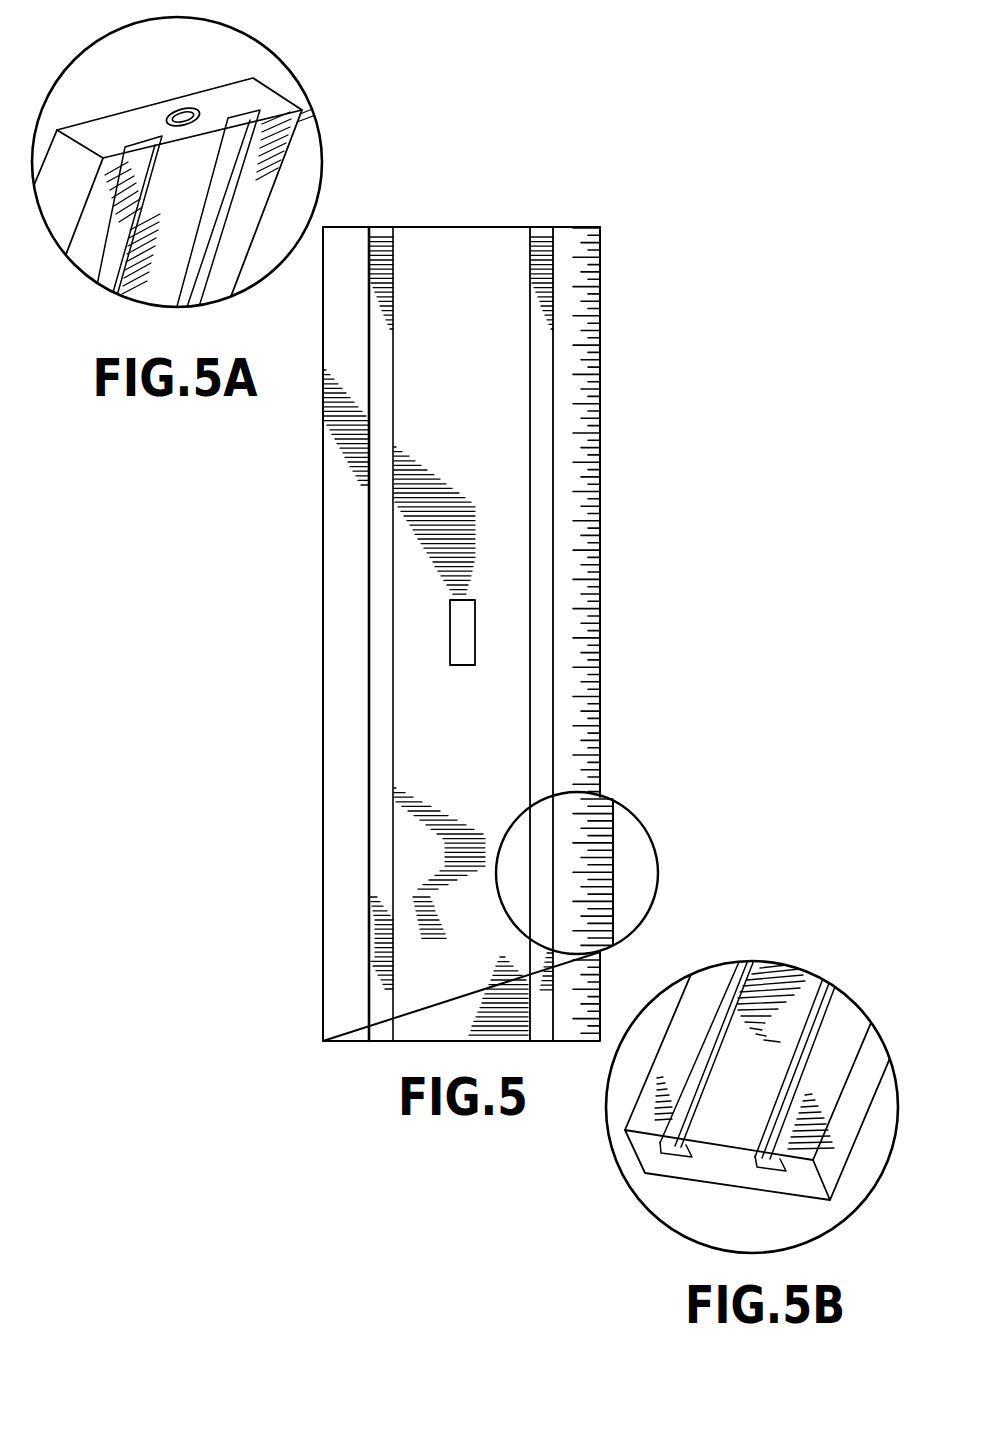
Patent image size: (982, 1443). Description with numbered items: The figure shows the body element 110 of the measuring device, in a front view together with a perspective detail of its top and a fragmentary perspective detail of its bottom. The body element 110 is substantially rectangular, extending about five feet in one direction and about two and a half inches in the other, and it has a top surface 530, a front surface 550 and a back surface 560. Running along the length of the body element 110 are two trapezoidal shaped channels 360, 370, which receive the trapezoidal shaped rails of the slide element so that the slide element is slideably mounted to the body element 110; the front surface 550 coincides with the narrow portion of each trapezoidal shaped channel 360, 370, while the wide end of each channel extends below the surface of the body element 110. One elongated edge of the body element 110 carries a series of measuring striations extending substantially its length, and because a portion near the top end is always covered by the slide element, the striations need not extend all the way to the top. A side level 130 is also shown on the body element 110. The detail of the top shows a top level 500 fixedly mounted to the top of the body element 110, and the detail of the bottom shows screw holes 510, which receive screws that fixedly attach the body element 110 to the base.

In FIG. 5, the body element 110 is at (323, 489).
In FIG. 5, the side level 130 is at (456, 614).
In FIG. 5, the trapezoidal shaped channel 360 is at (383, 553).
In FIG. 5A, the trapezoidal shaped channel 360 is at (128, 247).
In FIG. 5, the trapezoidal shaped channel 370 is at (532, 412).
In FIG. 5A, the trapezoidal shaped channel 370 is at (237, 162).
In FIG. 5A, the top level 500 is at (188, 103).
In FIG. 5B, the screw holes 510 is at (666, 1126).
In FIG. 5, the top surface 530 is at (486, 226).
In FIG. 5, the front surface 550 is at (415, 752).
In FIG. 5, the back surface 560 is at (323, 878).